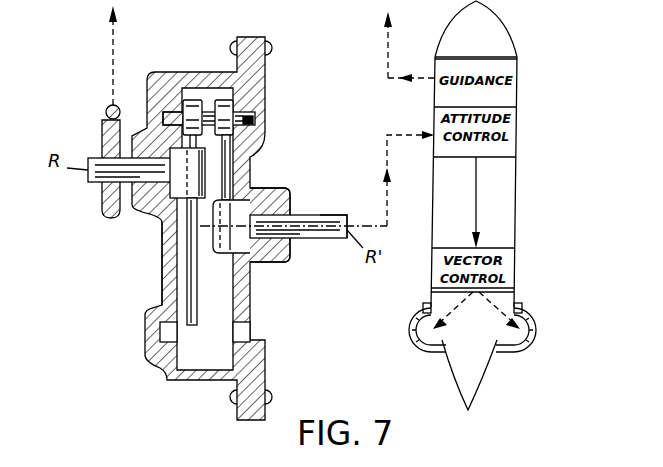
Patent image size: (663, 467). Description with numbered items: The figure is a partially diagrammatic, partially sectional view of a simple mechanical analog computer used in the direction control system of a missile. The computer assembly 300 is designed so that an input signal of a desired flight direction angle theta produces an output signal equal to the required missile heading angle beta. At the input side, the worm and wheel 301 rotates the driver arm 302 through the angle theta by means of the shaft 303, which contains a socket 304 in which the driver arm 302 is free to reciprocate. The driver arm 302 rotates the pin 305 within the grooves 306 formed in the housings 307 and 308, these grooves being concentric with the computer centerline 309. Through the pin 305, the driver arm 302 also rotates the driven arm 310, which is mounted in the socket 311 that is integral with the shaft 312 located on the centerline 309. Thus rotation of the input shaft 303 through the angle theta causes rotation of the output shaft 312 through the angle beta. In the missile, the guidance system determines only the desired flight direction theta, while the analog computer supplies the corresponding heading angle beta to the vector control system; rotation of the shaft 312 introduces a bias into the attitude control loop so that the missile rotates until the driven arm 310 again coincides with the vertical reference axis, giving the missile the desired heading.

The computer assembly 300 is at (122, 316).
The worm and wheel 301 is at (102, 121).
The driver arm 302 is at (188, 243).
The shaft 303 is at (102, 172).
The socket 304 is at (176, 198).
The pin 305 is at (253, 127).
The grooves 306 is at (162, 78).
The housing 307 is at (165, 295).
The housing 308 is at (252, 287).
The computer centerline 309 is at (312, 238).
The driven arm 310 is at (230, 167).
The socket 311 is at (233, 255).
The shaft 312 is at (340, 206).